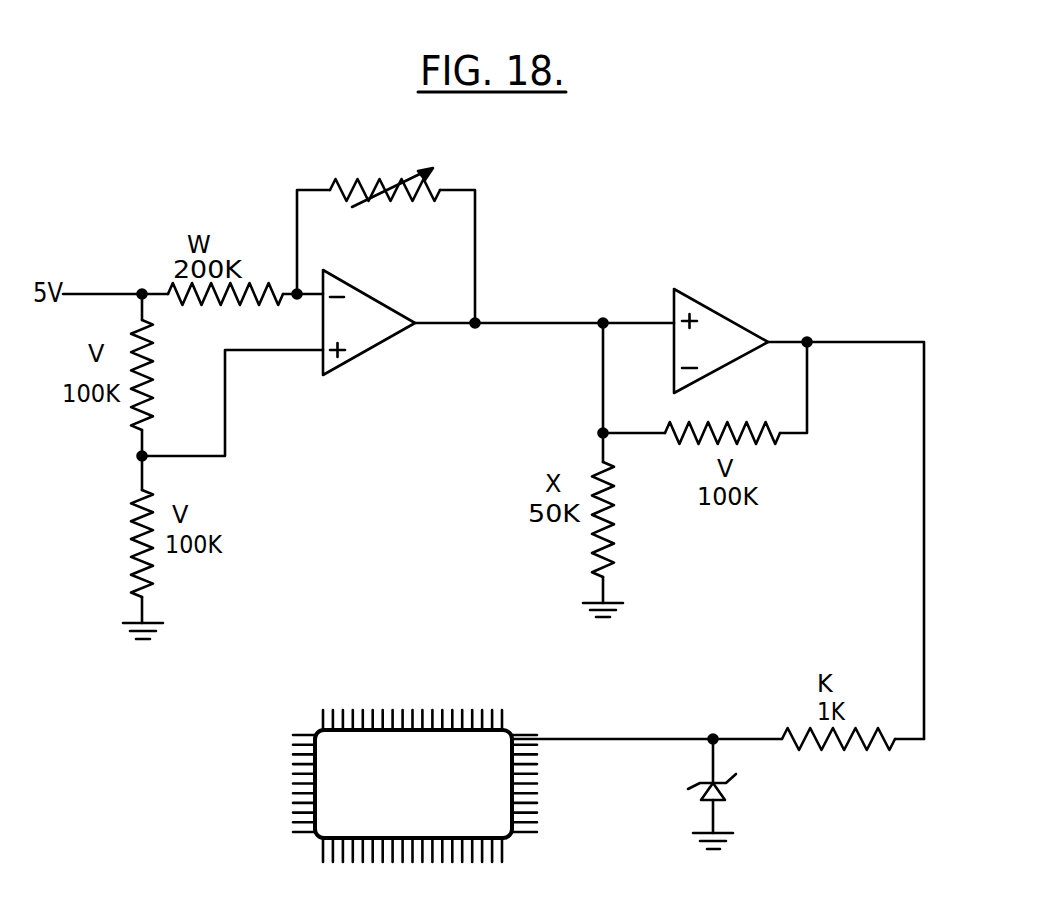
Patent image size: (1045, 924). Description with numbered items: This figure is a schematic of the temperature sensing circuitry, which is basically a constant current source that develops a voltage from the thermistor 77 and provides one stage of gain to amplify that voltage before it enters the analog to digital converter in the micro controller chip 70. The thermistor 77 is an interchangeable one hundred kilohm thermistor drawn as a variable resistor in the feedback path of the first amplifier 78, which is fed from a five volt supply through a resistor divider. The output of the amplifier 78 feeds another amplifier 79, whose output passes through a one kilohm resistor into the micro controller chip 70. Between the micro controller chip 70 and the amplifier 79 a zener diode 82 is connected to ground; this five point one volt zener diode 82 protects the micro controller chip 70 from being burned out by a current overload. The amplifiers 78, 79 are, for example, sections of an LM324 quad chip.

The thermistor 77 is at (348, 185).
The amplifier 78 is at (348, 363).
The amplifier 79 is at (737, 320).
The micro controller chip 70 is at (430, 790).
The zener diode 82 is at (700, 797).